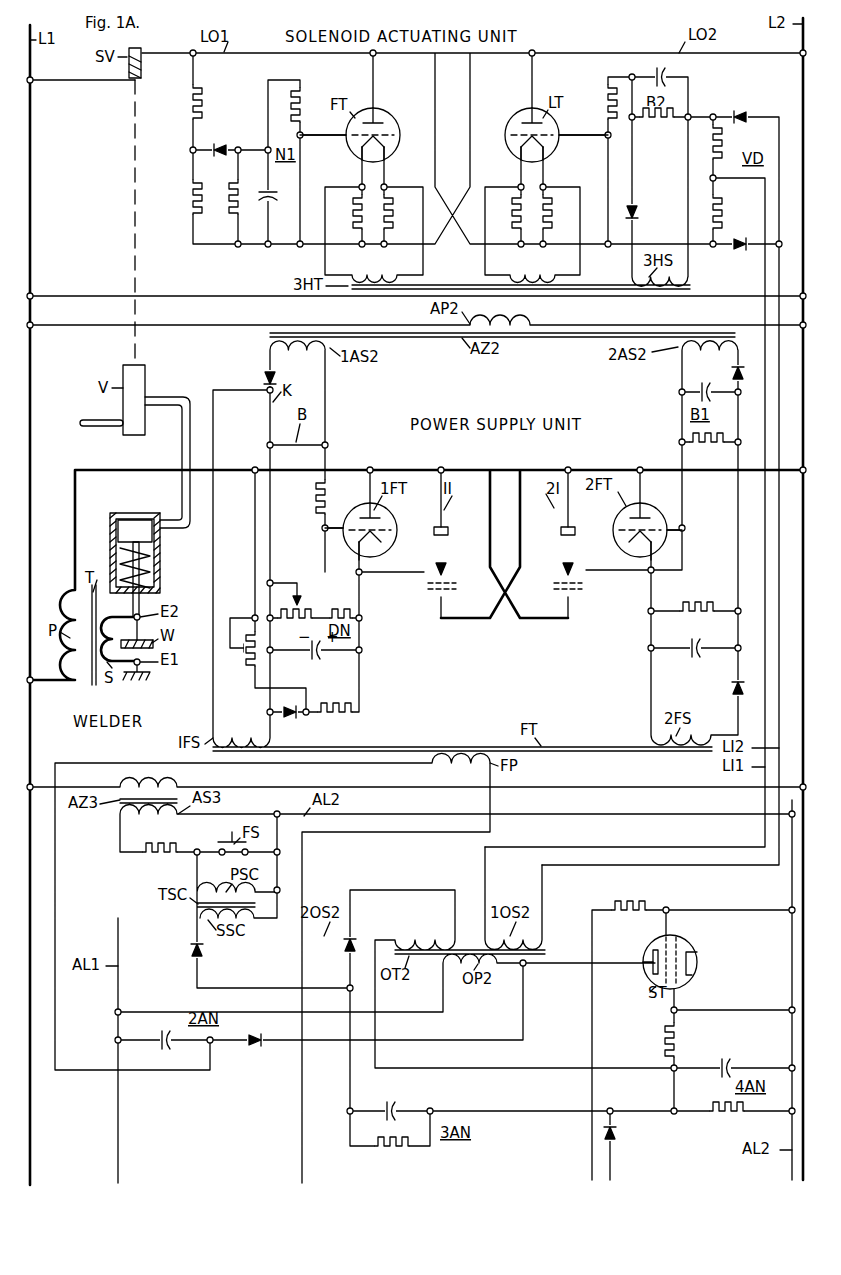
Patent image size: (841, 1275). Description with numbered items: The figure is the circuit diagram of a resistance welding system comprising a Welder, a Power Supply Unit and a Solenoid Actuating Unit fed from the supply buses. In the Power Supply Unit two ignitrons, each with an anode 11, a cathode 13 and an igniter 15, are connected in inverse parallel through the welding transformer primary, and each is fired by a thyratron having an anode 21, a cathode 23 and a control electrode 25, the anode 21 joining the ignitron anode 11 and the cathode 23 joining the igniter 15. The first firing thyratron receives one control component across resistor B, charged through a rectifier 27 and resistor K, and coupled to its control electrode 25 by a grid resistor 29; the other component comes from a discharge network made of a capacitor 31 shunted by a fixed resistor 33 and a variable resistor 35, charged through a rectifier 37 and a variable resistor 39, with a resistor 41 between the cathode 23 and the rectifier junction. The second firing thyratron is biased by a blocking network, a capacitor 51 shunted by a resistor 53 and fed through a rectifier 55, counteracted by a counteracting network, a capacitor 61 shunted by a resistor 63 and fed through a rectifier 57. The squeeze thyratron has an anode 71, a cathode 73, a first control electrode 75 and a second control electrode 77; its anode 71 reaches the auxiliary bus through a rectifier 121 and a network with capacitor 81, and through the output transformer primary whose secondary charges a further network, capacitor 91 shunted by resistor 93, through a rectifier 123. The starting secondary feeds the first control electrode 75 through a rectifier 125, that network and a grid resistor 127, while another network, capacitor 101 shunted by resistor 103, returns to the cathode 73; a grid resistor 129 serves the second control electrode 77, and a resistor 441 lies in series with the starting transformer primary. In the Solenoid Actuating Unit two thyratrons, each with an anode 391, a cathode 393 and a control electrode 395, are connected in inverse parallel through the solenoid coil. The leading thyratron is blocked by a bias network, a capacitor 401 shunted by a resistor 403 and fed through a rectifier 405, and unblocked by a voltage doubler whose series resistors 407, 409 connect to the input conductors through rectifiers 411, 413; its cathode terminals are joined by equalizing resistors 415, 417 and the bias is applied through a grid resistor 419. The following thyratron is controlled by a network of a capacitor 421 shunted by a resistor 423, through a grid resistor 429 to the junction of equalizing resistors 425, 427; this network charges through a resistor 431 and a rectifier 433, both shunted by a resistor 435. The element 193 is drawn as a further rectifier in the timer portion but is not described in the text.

The anode 11 is at (450, 530).
The cathode 13 is at (458, 588).
The igniter 15 is at (444, 570).
The anode 21 is at (366, 516).
The cathode 23 is at (372, 552).
The control electrode 25 is at (386, 522).
The rectifier 27 is at (268, 378).
The grid resistor 29 is at (316, 500).
The capacitor 31 is at (312, 654).
The fixed resistor 33 is at (350, 608).
The variable resistor 35 is at (302, 618).
The rectifier 37 is at (292, 716).
The variable resistor 39 is at (248, 670).
The resistor 41 is at (336, 704).
The capacitor 51 is at (700, 386).
The resistor 53 is at (698, 444).
The rectifier 55 is at (698, 354).
The rectifier 57 is at (730, 688).
The capacitor 61 is at (690, 656).
The resistor 63 is at (694, 602).
The anode 71 is at (652, 972).
The cathode 73 is at (690, 976).
The first control electrode 75 is at (680, 946).
The second control electrode 77 is at (656, 944).
The capacitor 81 is at (164, 1048).
The capacitor 91 is at (396, 1106).
The resistor 93 is at (396, 1148).
The capacitor 101 is at (730, 1064).
The resistor 103 is at (726, 1112).
The rectifier 121 is at (256, 1046).
The rectifier 123 is at (344, 942).
The rectifier 125 is at (194, 948).
The grid resistor 127 is at (662, 1038).
The grid resistor 129 is at (648, 900).
The rectifier 193 is at (614, 1134).
The anode 391 is at (377, 114).
The cathode 393 is at (384, 158).
The control electrode 395 is at (320, 137).
The capacitor 401 is at (666, 76).
The resistor 403 is at (662, 129).
The rectifier 405 is at (636, 211).
The resistor 407 is at (725, 144).
The resistor 409 is at (723, 214).
The rectifier 411 is at (740, 114).
The second rectifier 413 is at (744, 252).
The equalizing resistor 415 is at (514, 248).
The equalizing resistor 417 is at (540, 197).
The grid resistor 419 is at (602, 100).
The capacitor 421 is at (275, 202).
The resistor 423 is at (230, 213).
The equalizing resistor 425 is at (348, 195).
The equalizing resistor 427 is at (400, 246).
The grid resistor 429 is at (298, 104).
The resistor 431 is at (192, 110).
The rectifier 433 is at (218, 146).
The resistor 435 is at (190, 192).
The resistor 441 is at (146, 844).